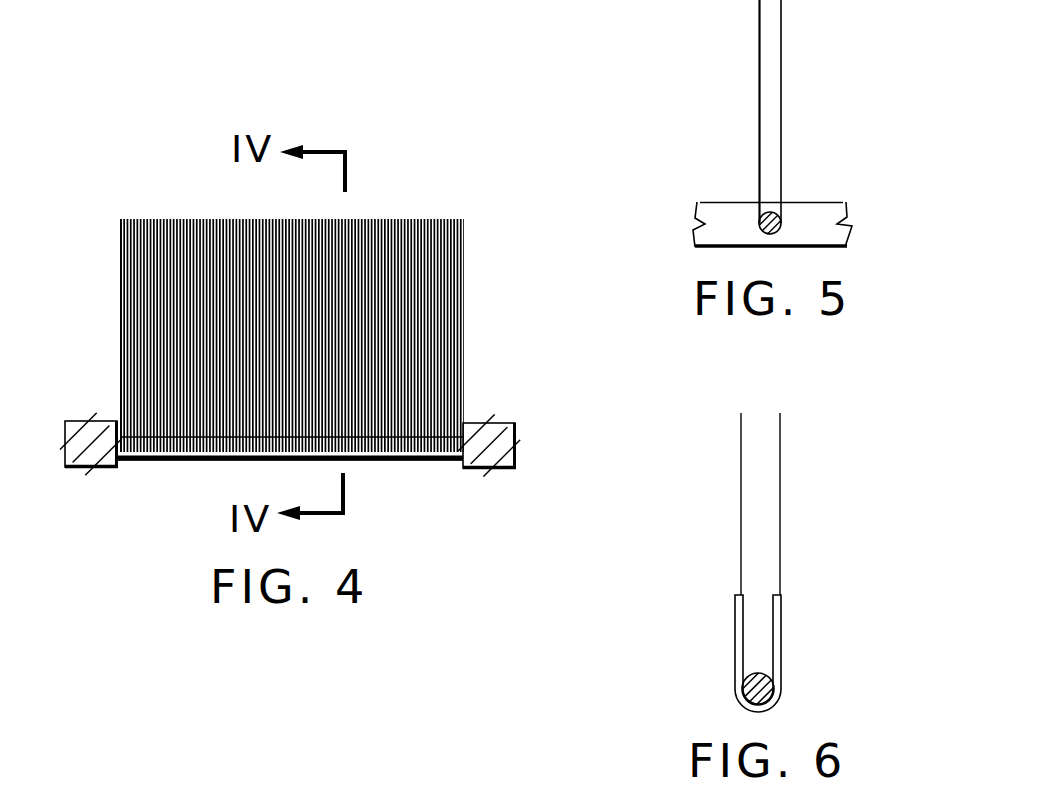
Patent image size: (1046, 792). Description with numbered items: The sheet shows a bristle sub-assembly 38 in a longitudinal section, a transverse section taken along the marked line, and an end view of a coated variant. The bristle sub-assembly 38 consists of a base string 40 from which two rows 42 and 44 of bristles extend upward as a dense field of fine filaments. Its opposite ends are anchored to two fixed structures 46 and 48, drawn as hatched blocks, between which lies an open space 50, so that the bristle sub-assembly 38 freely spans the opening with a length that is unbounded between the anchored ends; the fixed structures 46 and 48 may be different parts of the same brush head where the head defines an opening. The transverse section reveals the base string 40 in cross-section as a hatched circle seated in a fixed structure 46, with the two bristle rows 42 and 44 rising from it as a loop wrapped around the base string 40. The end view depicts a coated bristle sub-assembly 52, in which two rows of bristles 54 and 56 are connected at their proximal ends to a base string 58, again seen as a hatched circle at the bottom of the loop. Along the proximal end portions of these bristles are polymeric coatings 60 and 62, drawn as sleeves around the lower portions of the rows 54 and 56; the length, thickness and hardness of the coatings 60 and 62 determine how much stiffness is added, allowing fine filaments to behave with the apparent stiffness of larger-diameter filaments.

In FIG. 4, the bristle sub-assembly 38 is at (470, 320).
In FIG. 4, the base string 40 is at (203, 462).
In FIG. 5, the base string 40 is at (768, 213).
In FIG. 4, the row of bristles 42 is at (100, 295).
In FIG. 5, the row of bristles 42 is at (760, 87).
In FIG. 5, the row of bristles 44 is at (783, 87).
In FIG. 4, the fixed structure 46 is at (92, 421).
In FIG. 5, the fixed structure 46 is at (820, 202).
In FIG. 4, the fixed structure 48 is at (478, 420).
In FIG. 4, the open space 50 is at (381, 477).
In FIG. 6, the coated bristle sub-assembly 52 is at (698, 678).
In FIG. 6, the row of bristles 54 is at (740, 498).
In FIG. 6, the row of bristles 56 is at (783, 498).
In FIG. 6, the base string 58 is at (778, 690).
In FIG. 6, the polymeric coating 60 is at (733, 628).
In FIG. 6, the polymeric coating 62 is at (785, 627).